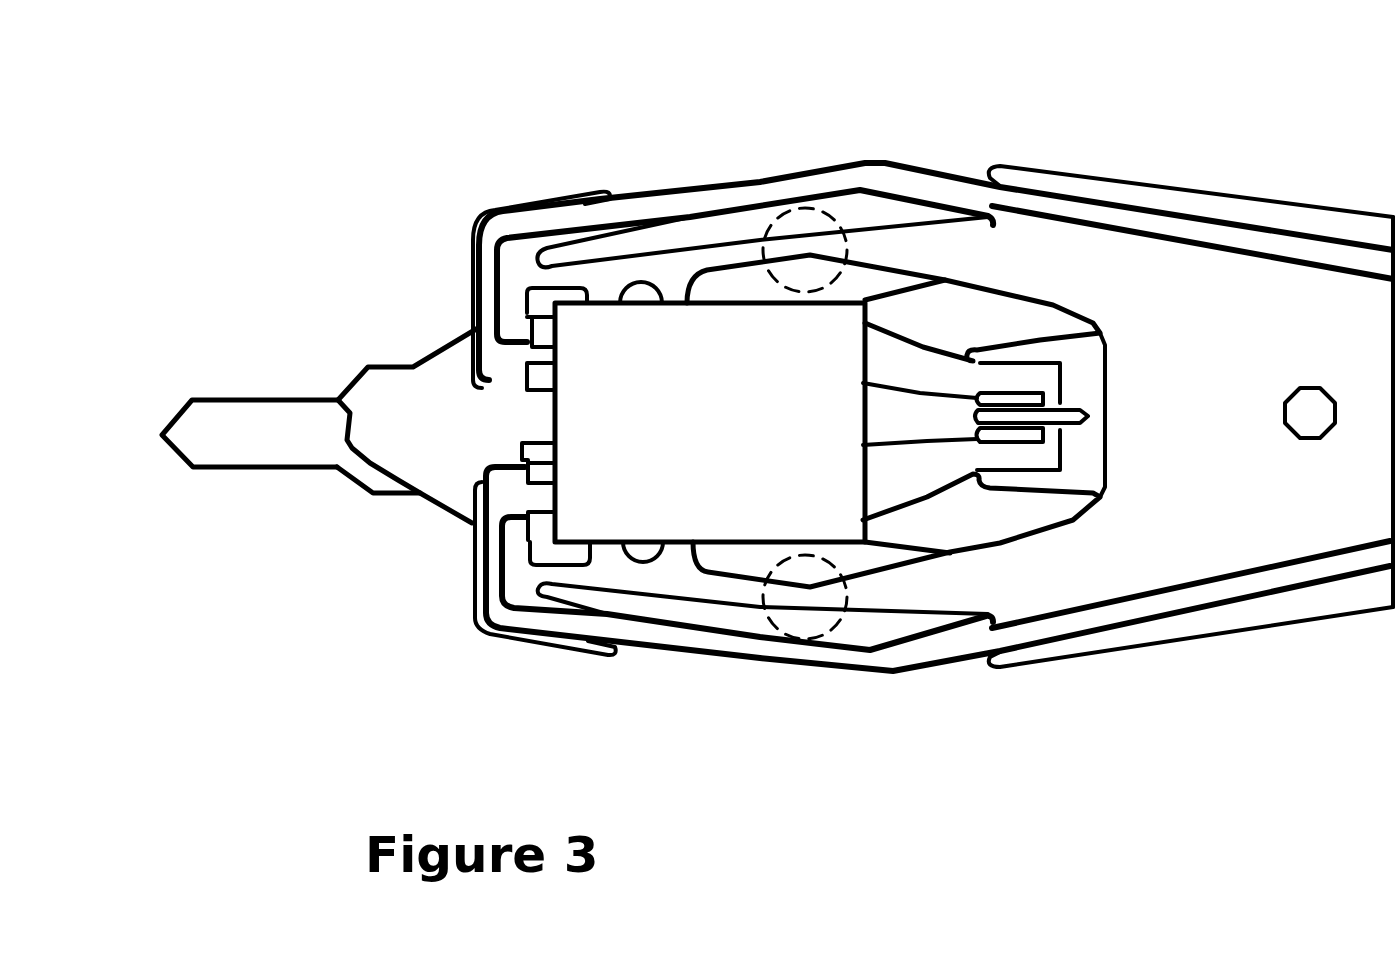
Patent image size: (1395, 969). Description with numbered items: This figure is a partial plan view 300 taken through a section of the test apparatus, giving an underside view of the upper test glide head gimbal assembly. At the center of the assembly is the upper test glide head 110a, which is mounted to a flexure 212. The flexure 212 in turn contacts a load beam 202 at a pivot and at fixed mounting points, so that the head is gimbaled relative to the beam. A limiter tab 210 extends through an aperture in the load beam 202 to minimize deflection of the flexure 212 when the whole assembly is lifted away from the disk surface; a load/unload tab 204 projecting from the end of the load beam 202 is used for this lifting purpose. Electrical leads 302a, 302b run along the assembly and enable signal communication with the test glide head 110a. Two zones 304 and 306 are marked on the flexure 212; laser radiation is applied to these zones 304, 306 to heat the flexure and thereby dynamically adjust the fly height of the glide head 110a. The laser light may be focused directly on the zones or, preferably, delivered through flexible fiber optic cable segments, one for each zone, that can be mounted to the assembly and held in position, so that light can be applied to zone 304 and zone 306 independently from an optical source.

The partial plan view 300 is at (1193, 93).
The electrical lead 302a is at (905, 165).
The electrical lead 302b is at (905, 672).
The zone 304 is at (770, 230).
The zone 306 is at (803, 632).
The flexure 212 is at (630, 272).
The load beam 202 is at (428, 412).
The load/unload tab 204 is at (220, 420).
The limiter tab 210 is at (1037, 380).
The upper test glide head 110a is at (736, 442).